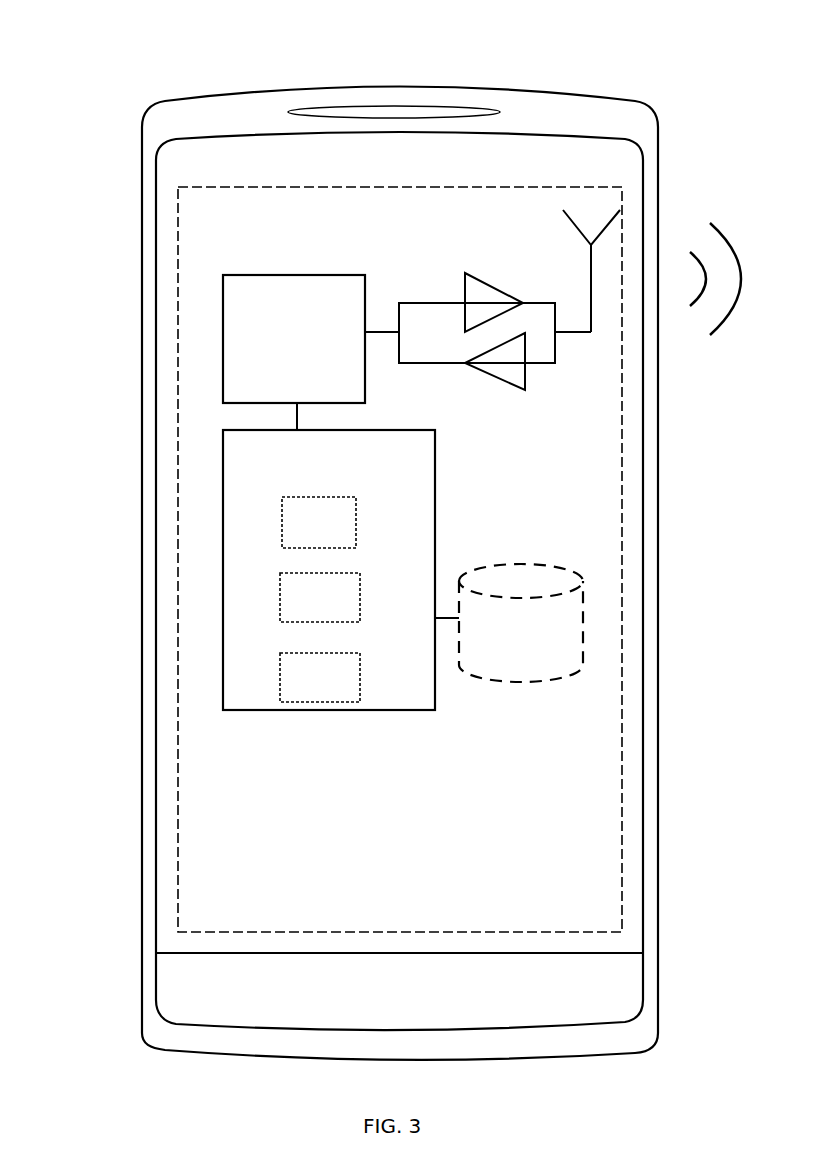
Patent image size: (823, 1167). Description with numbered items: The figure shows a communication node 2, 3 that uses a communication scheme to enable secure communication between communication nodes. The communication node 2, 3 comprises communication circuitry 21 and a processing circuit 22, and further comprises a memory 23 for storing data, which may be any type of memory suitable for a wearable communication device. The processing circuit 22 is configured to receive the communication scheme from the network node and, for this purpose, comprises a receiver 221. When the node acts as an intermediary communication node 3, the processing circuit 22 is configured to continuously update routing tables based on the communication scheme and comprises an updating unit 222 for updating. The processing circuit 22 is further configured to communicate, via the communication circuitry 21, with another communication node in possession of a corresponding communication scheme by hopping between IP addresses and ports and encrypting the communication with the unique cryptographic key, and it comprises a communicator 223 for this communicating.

The communication node 2 is at (389, 535).
The communication node 3 is at (140, 50).
The communication circuitry 21 is at (294, 339).
The processing circuit 22 is at (329, 570).
The receiver 221 is at (319, 522).
The updating unit 222 is at (320, 597).
The communicator 223 is at (320, 677).
The memory 23 is at (521, 623).